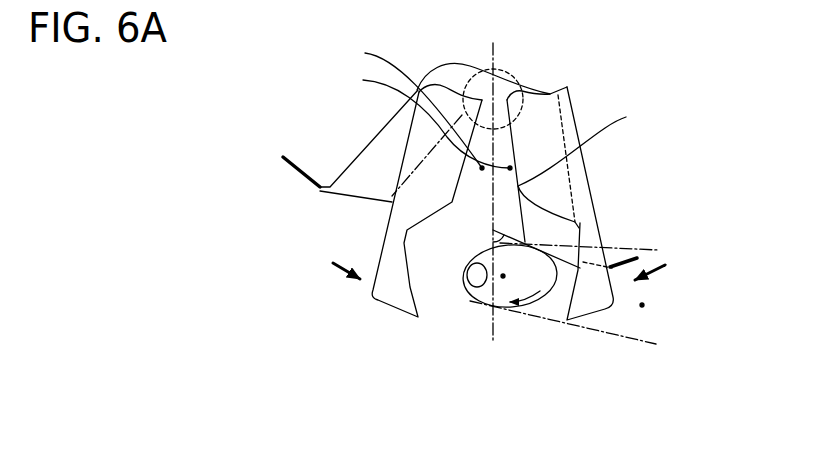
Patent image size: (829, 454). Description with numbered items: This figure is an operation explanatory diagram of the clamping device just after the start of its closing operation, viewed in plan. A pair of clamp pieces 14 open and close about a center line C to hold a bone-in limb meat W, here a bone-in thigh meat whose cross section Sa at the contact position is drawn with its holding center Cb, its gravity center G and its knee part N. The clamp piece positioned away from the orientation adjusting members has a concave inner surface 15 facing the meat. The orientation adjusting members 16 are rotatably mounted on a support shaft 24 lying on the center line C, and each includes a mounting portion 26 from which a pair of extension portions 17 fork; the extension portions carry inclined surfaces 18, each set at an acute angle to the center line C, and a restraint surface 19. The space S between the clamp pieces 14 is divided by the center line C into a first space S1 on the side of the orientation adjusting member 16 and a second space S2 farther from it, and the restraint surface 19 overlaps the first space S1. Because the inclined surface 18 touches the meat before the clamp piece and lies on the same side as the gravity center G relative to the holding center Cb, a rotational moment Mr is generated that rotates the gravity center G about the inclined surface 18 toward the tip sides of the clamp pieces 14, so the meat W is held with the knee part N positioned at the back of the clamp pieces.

The clamp pieces 14 is at (376, 260).
The inner surface 15 is at (405, 229).
The orientation adjusting members 16 is at (350, 155).
The extension portions 17 is at (380, 129).
The inclined surfaces 18 is at (360, 198).
The restraint surface 19 is at (578, 145).
The support shaft 24 is at (481, 80).
The mounting portion 26 is at (453, 72).
The center line C is at (494, 62).
The space S is at (338, 27).
The first space S1 is at (409, 101).
The second space S2 is at (423, 116).
The holding center Cb is at (503, 278).
The cross section Sa is at (477, 287).
The rotational moment Mr is at (538, 295).
The knee part N is at (467, 302).
The bone-in limb meat W is at (622, 337).
The gravity center G is at (643, 306).